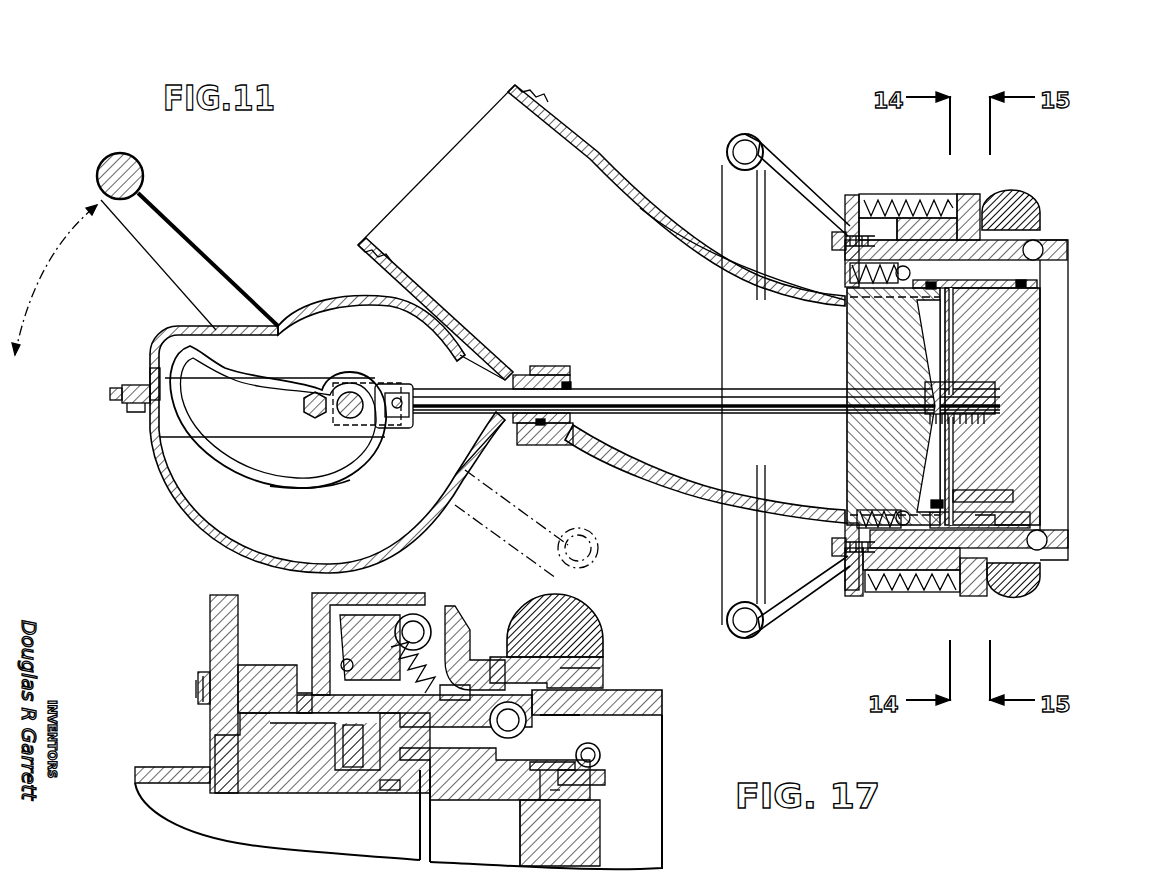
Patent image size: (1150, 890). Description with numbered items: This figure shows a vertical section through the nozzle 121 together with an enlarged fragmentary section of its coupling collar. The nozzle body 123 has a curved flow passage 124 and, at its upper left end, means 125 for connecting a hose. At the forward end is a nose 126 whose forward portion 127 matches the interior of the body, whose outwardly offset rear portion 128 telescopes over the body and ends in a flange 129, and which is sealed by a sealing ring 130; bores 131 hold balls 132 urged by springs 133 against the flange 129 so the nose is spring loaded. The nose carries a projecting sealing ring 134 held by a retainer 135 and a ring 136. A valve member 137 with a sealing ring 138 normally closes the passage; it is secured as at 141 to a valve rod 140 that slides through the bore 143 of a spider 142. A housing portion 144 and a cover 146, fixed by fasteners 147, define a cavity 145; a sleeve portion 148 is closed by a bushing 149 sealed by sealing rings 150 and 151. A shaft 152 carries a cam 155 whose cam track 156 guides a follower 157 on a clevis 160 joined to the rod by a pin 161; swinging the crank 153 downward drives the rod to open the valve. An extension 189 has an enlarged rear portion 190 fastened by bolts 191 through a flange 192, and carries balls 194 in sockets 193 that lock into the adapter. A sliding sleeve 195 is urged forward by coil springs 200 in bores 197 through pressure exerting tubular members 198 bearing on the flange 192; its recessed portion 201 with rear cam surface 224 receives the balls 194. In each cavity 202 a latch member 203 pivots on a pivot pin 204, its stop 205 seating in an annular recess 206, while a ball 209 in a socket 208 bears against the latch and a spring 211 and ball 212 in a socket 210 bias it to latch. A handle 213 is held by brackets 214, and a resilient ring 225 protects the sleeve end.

In FIG. 11, the nozzle 121 is at (612, 160).
In FIG. 11, the nozzle body 123 is at (640, 205).
In FIG. 17, the nozzle body 123 is at (175, 767).
In FIG. 11, the flow passage 124 is at (705, 258).
In FIG. 11, the hose connection means 125 is at (535, 90).
In FIG. 11, the nose 126 is at (965, 490).
In FIG. 11, the forward portion of nose 127 is at (1005, 518).
In FIG. 11, the rear portion of nose 128 is at (955, 288).
In FIG. 11, the flange 129 is at (914, 592).
In FIG. 17, the flange 129 is at (345, 760).
In FIG. 11, the sealing ring 130 is at (945, 500).
In FIG. 17, the sealing ring 130 is at (372, 782).
In FIG. 11, the bores 131 is at (870, 530).
In FIG. 11, the balls 132 is at (880, 500).
In FIG. 11, the spring 133 is at (872, 512).
In FIG. 11, the sealing ring 134 is at (1035, 282).
In FIG. 17, the sealing ring 134 is at (598, 774).
In FIG. 17, the retainer 135 is at (552, 790).
In FIG. 17, the ring 136 is at (542, 800).
In FIG. 11, the valve member 137 is at (1030, 328).
In FIG. 17, the valve member 137 is at (540, 838).
In FIG. 17, the sealing ring 138 is at (600, 800).
In FIG. 11, the valve rod 140 is at (700, 390).
In FIG. 11, the securing means 141 is at (954, 380).
In FIG. 11, the spider 142 is at (870, 428).
In FIG. 11, the bore 143 is at (858, 385).
In FIG. 11, the housing portion 144 is at (336, 292).
In FIG. 11, the cavity 145 is at (306, 315).
In FIG. 11, the cover 146 is at (178, 505).
In FIG. 11, the fasteners 147 is at (132, 415).
In FIG. 11, the sleeve portion 148 is at (548, 374).
In FIG. 11, the bushing 149 is at (572, 381).
In FIG. 11, the sealing ring 150 is at (540, 372).
In FIG. 11, the sealing ring 151 is at (585, 385).
In FIG. 11, the shaft 152 is at (320, 388).
In FIG. 11, the crank 153 is at (193, 225).
In FIG. 11, the cam 155 is at (236, 382).
In FIG. 11, the cam track 156 is at (300, 478).
In FIG. 11, the follower 157 is at (362, 392).
In FIG. 11, the clevis 160 is at (395, 386).
In FIG. 11, the pin 161 is at (397, 410).
In FIG. 11, the extension 189 is at (1072, 553).
In FIG. 17, the extension 189 is at (665, 702).
In FIG. 11, the enlarged rear portion 190 is at (882, 570).
In FIG. 17, the enlarged rear portion 190 is at (250, 664).
In FIG. 11, the bolts 191 is at (830, 243).
In FIG. 17, the bolts 191 is at (196, 690).
In FIG. 11, the flange 192 is at (852, 598).
In FIG. 17, the flange 192 is at (208, 605).
In FIG. 17, the sockets 193 is at (600, 758).
In FIG. 11, the balls 194 is at (1045, 262).
In FIG. 17, the balls 194 is at (585, 748).
In FIG. 11, the sleeve 195 is at (985, 600).
In FIG. 17, the sleeve 195 is at (608, 650).
In FIG. 11, the bore 197 is at (945, 198).
In FIG. 11, the pressure exerting tubular member 198 is at (862, 195).
In FIG. 11, the coil spring 200 is at (925, 194).
In FIG. 17, the recessed portion 201 is at (612, 672).
In FIG. 17, the cavity 202 is at (432, 600).
In FIG. 17, the latch member 203 is at (318, 620).
In FIG. 17, the pivot pin 204 is at (340, 660).
In FIG. 17, the stop 205 is at (525, 690).
In FIG. 17, the annular recess 206 is at (487, 763).
In FIG. 17, the socket 208 is at (572, 718).
In FIG. 17, the ball 209 is at (493, 732).
In FIG. 17, the socket 210 is at (398, 610).
In FIG. 17, the spring 211 is at (455, 625).
In FIG. 17, the ball 212 is at (400, 615).
In FIG. 11, the handle 213 is at (752, 645).
In FIG. 11, the brackets 214 is at (790, 168).
In FIG. 17, the rear cam surface 224 is at (608, 684).
In FIG. 11, the resilient ring 225 is at (1040, 585).